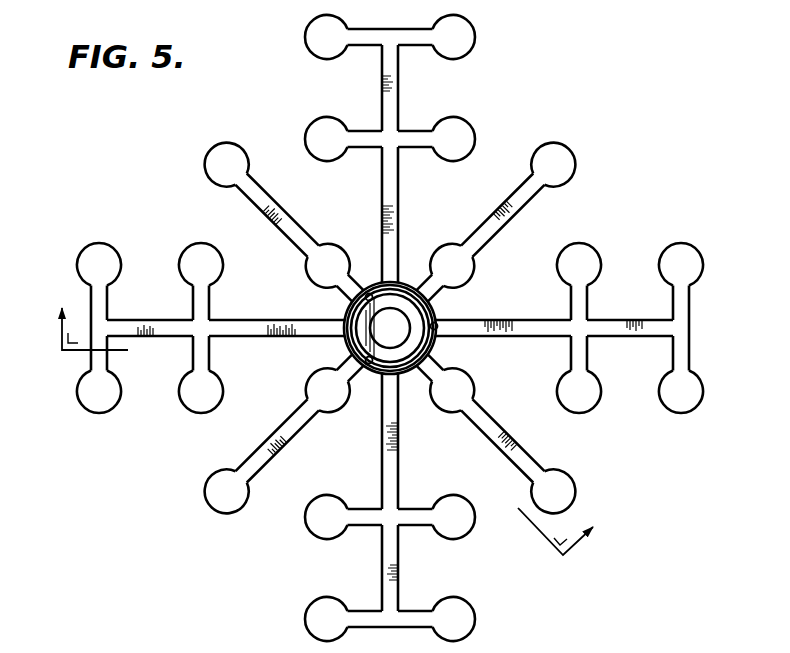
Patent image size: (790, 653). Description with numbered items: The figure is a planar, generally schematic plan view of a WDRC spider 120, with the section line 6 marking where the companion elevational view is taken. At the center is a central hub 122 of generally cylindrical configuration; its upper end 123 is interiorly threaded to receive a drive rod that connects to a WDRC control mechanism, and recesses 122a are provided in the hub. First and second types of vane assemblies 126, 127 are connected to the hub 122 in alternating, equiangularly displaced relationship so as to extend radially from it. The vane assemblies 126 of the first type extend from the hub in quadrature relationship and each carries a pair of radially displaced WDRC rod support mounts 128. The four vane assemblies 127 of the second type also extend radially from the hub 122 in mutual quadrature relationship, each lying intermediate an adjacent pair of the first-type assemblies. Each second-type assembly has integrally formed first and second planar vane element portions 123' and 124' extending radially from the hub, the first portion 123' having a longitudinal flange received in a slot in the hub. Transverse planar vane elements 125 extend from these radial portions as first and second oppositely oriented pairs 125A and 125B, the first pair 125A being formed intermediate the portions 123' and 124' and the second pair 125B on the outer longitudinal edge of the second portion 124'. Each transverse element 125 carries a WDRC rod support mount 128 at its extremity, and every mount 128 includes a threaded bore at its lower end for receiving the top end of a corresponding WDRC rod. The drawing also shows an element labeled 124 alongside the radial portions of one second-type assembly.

The WDRC spider 120 is at (500, 535).
The central hub 122 is at (437, 343).
The recesses 122a is at (433, 325).
The upper end 123 is at (476, 328).
The first planar vane element portion 123' is at (276, 306).
The outer radial bar segment 124 is at (559, 328).
The second planar vane element portion 124' is at (150, 310).
The transverse planar vane elements 125 is at (195, 292).
The first pair of transverse vanes 125A is at (162, 418).
The second pair of transverse vanes 125B is at (68, 405).
The first type of vane assembly 126 is at (277, 197).
The second type of vane assembly 127 is at (400, 207).
The WDRC rod support mount 128 is at (90, 247).
The section line 6— 6 is at (333, 417).